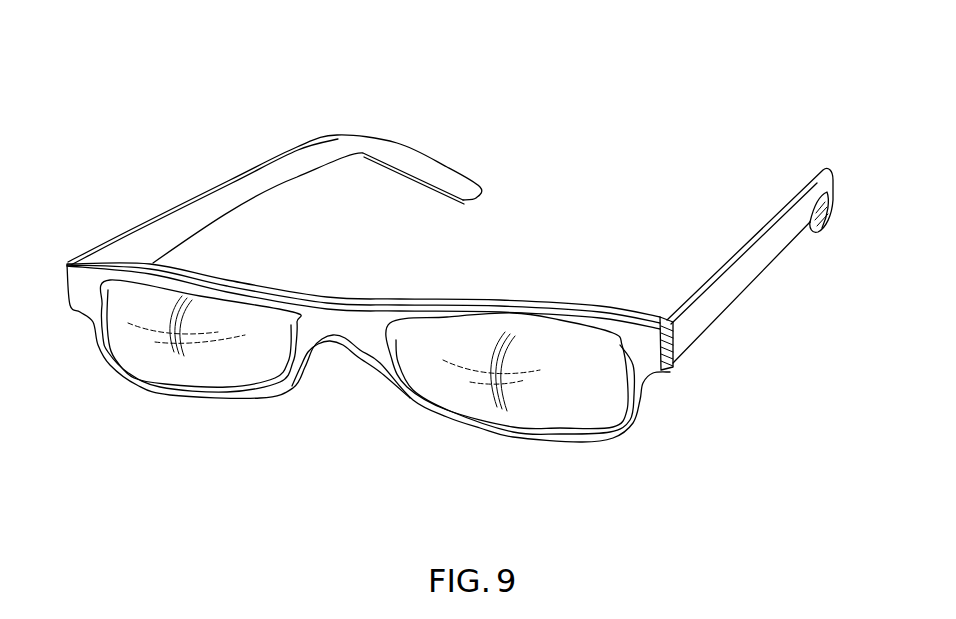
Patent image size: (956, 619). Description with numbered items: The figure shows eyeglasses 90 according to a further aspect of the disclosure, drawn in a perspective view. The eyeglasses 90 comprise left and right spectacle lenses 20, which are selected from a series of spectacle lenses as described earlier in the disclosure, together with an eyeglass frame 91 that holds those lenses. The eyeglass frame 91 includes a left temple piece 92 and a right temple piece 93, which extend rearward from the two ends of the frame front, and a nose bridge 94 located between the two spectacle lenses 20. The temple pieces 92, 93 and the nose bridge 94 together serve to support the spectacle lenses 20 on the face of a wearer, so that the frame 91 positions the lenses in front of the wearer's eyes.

The eyeglasses 90 is at (450, 276).
The eyeglass frame 91 is at (110, 218).
The left temple piece 92 is at (213, 200).
The right temple piece 93 is at (733, 287).
The nose bridge 94 is at (342, 333).
The spectacle lenses 20 is at (216, 360).